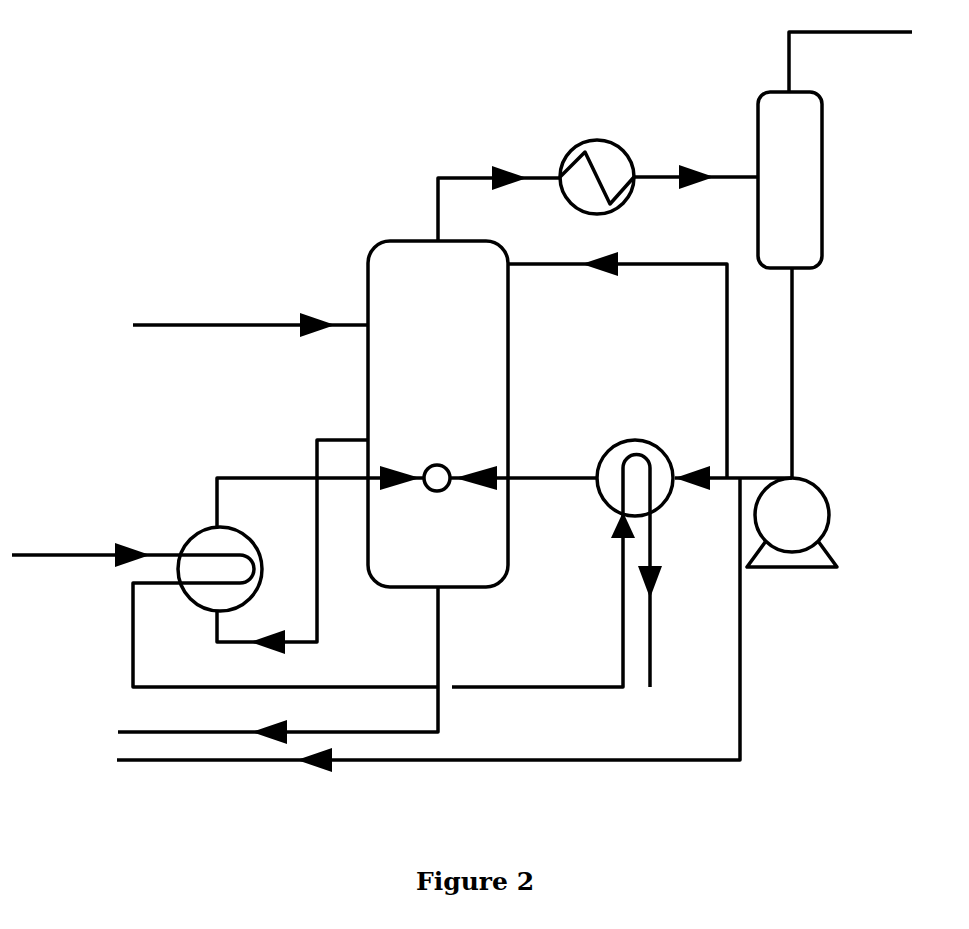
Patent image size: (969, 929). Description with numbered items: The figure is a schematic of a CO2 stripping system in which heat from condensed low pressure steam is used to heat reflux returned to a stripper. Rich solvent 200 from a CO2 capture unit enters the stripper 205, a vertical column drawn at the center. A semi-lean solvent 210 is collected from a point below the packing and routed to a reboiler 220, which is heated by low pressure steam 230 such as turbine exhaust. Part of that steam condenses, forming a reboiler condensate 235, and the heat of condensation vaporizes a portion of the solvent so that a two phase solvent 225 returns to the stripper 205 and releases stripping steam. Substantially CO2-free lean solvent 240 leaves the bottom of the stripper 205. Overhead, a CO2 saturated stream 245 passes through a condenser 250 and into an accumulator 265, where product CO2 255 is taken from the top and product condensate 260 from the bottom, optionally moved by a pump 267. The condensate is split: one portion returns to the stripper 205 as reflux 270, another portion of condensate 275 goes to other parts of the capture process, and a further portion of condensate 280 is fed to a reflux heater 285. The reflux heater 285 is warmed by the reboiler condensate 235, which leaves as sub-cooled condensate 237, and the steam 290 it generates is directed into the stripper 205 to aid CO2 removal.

The rich solvent 200 is at (208, 318).
The stripper 205 is at (418, 383).
The semi-lean solvent 210 is at (322, 432).
The reboiler 220 is at (190, 530).
The two phase solvent 225 is at (220, 470).
The low pressure steam 230 is at (87, 548).
The reboiler condensate 235 is at (612, 590).
The sub-cooled condensate 237 is at (652, 628).
The lean solvent 240 is at (432, 618).
The CO2 saturated stream 245 is at (425, 183).
The condenser 250 is at (555, 155).
The product CO2 255 is at (780, 52).
The product condensate 260 is at (800, 375).
The accumulator 265 is at (826, 185).
The pump 267 is at (833, 478).
The reflux 270 is at (672, 268).
The condensate 275 is at (746, 722).
The condensate 280 is at (692, 460).
The reflux heater 285 is at (607, 430).
The steam 290 is at (567, 490).